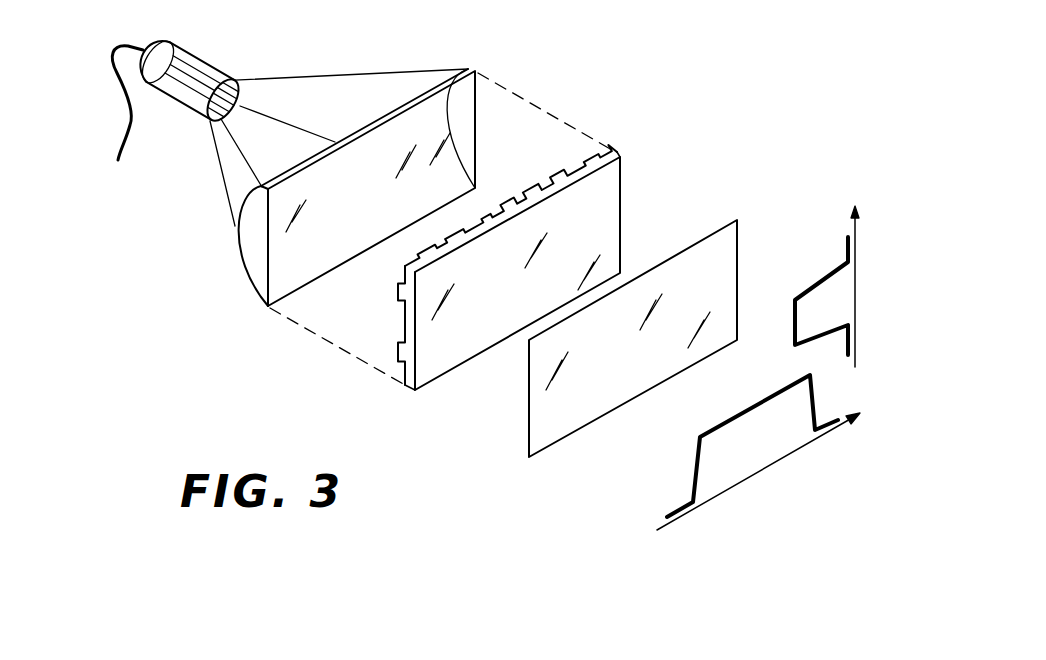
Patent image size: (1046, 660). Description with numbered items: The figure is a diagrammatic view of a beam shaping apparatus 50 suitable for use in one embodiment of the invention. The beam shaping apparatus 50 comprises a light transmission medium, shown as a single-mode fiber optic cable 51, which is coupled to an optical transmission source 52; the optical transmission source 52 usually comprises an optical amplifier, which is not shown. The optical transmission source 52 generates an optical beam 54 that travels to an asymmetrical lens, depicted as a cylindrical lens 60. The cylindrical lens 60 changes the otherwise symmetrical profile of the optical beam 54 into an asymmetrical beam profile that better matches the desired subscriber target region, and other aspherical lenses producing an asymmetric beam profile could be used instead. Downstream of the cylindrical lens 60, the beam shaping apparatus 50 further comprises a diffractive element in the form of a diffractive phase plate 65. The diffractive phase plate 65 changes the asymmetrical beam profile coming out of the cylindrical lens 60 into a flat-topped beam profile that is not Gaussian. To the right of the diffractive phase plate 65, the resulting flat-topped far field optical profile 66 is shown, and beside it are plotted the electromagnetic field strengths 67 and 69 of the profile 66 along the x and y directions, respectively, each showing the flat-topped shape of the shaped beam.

The beam shaping apparatus 50 is at (669, 98).
The single-mode fiber optic cable 51 is at (132, 145).
The optical transmission source 52 is at (205, 64).
The optical beam 54 is at (354, 75).
The cylindrical lens 60 is at (476, 128).
The diffractive phase plate 65 is at (621, 210).
The flat-topped far field optical profile 66 is at (738, 280).
The electromagnetic field strength along the x direction 67 is at (697, 468).
The electromagnetic field strength along the y direction 69 is at (795, 322).